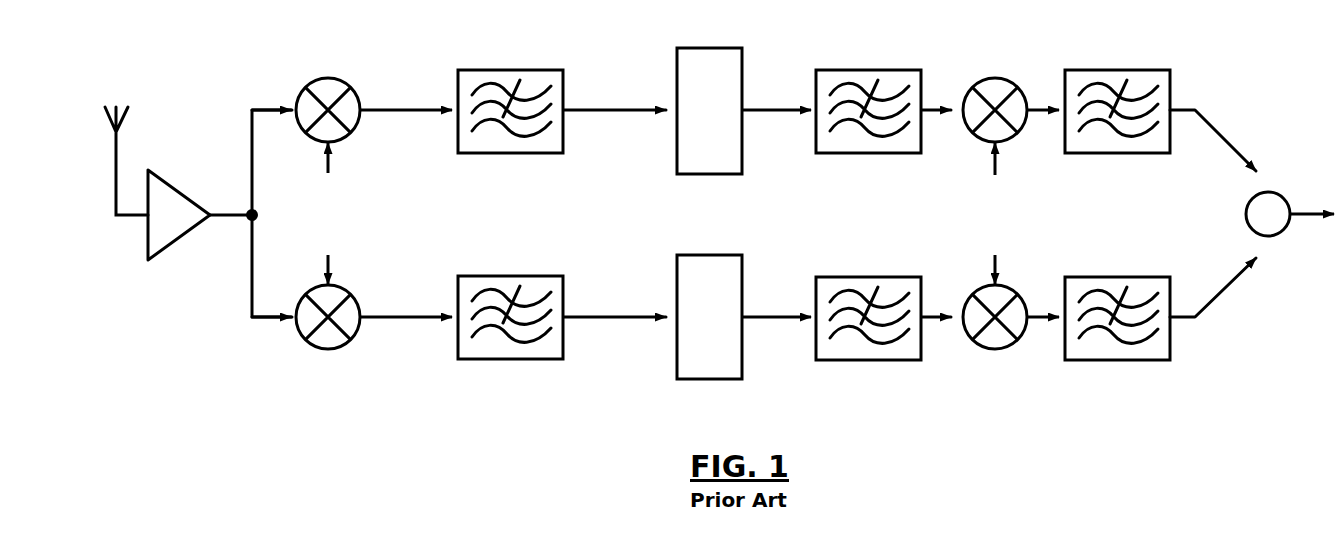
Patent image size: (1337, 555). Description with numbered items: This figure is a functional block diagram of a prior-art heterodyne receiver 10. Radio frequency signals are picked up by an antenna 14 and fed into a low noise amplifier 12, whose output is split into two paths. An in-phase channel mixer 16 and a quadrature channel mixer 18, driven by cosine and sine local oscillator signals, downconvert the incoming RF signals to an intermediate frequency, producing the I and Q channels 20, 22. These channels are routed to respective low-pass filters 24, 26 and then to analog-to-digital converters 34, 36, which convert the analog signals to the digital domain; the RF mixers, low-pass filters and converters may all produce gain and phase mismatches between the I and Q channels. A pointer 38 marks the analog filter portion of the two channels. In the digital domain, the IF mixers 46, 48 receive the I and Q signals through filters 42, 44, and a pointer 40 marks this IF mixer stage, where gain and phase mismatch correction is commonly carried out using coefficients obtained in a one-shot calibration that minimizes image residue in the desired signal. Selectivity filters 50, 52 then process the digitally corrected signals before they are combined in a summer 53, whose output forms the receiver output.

The heterodyne receiver 10 is at (270, 368).
The low noise amplifier 12 is at (166, 181).
The antenna 14 is at (116, 177).
The in-phase channel mixer 16 is at (338, 82).
The quadrature channel mixer 18 is at (350, 292).
The I channel 20 is at (385, 110).
The Q channel 22 is at (385, 317).
The low-pass filter 24 is at (500, 70).
The low-pass filter 26 is at (478, 276).
The analog-to-digital converter 34 is at (705, 48).
The analog-to-digital converter 36 is at (742, 272).
The analog filter stage 38 is at (529, 386).
The IF mixer stage 40 is at (1013, 388).
The filter 42 is at (872, 70).
The filter 44 is at (872, 277).
The IF mixer 46 is at (1005, 82).
The IF mixer 48 is at (1015, 292).
The selectivity filter 50 is at (1112, 70).
The selectivity filter 52 is at (1128, 277).
The summer 53 is at (1247, 213).